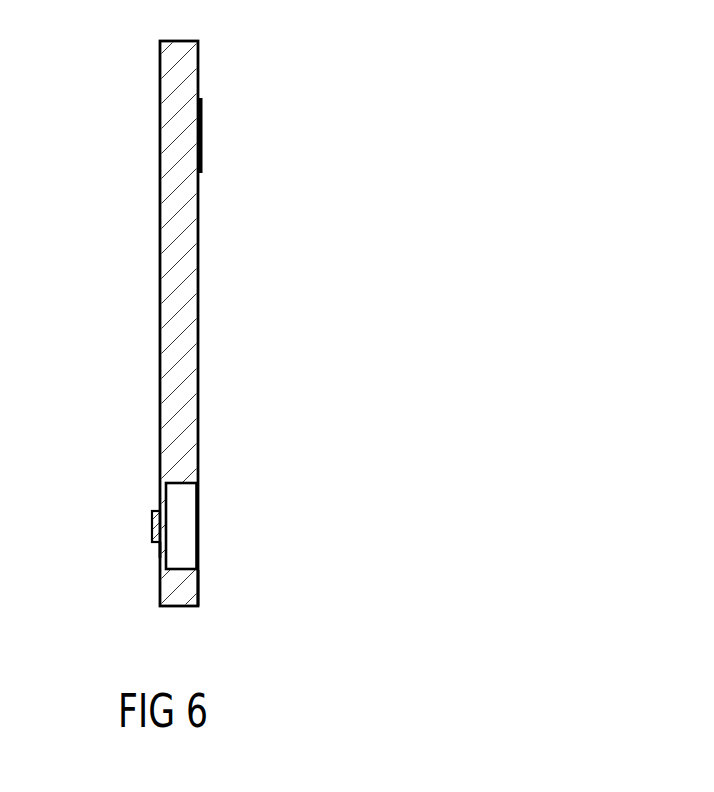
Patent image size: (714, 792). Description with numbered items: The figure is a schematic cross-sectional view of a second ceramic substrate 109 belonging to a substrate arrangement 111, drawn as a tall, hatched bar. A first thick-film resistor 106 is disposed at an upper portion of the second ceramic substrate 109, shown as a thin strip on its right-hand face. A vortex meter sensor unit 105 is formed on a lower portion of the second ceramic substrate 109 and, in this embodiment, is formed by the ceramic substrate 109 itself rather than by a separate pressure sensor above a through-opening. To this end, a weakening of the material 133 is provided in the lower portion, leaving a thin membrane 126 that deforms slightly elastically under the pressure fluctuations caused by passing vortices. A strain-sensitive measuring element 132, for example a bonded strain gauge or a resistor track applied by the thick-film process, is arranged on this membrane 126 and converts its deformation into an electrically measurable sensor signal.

The vortex meter sensor unit 105 is at (232, 560).
The first thick-film resistor 106 is at (204, 135).
The second ceramic substrate 109 is at (204, 67).
The substrate arrangement 111 is at (275, 327).
The thin membrane 126 is at (150, 550).
The strain-sensitive measuring element 132 is at (144, 523).
The weakening of the material 133 is at (199, 512).